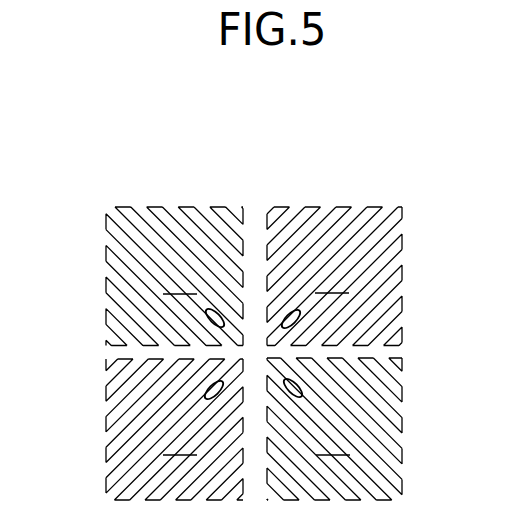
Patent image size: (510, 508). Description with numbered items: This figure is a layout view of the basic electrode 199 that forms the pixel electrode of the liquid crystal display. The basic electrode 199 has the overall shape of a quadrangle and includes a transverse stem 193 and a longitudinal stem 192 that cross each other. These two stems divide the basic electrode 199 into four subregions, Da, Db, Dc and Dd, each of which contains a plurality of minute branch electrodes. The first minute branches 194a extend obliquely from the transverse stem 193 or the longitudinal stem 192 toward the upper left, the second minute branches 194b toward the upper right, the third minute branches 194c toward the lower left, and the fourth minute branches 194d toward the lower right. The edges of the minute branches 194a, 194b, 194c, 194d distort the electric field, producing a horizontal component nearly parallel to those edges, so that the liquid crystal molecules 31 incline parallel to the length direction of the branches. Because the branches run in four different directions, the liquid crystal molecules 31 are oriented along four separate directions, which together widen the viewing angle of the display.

The basic electrode 199 is at (341, 188).
The first minute branch electrode 194a is at (193, 236).
The second minute branch electrode 194b is at (368, 224).
The third minute branch electrode 194c is at (141, 453).
The fourth minute branch electrode 194d is at (375, 474).
The longitudinal stem 192 is at (267, 250).
The transverse stem 193 is at (297, 369).
The liquid crystal molecules 31 is at (301, 313).